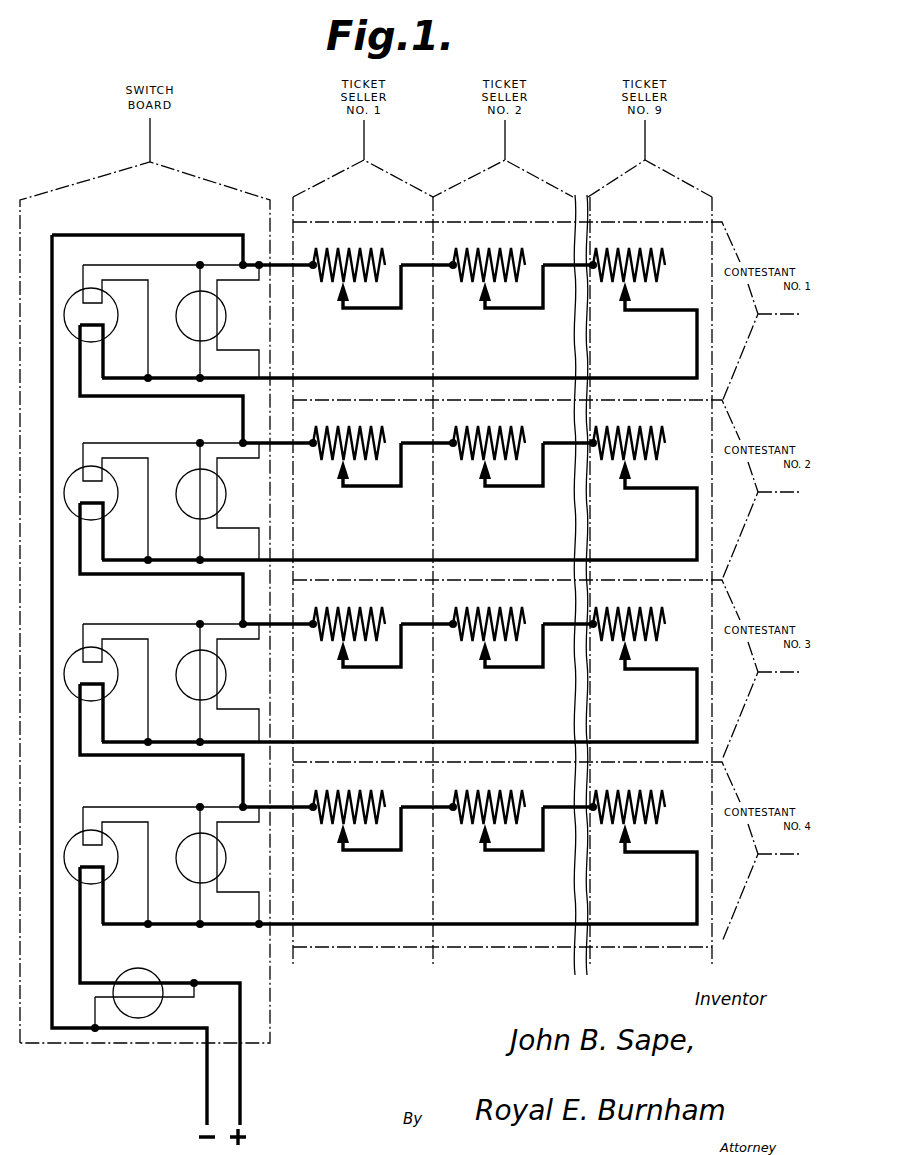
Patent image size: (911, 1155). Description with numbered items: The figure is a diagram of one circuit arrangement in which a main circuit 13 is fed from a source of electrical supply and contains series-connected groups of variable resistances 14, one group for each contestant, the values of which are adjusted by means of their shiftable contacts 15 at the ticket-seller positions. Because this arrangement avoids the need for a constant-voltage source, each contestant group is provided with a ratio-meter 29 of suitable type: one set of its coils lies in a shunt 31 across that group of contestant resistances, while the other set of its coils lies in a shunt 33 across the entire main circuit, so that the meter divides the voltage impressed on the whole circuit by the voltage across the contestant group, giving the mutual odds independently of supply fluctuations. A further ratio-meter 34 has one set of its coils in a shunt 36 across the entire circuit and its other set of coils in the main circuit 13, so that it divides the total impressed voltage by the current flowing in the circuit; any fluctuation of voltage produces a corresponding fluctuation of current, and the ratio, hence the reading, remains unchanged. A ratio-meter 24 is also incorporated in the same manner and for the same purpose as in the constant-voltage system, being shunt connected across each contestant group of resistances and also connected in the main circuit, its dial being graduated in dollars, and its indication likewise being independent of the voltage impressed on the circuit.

The main circuit 13 is at (230, 1077).
The variable resistances 14 is at (457, 252).
The shiftable contacts 15 is at (622, 300).
The ratio-meter 24 is at (104, 317).
The ratio-meter 29 is at (222, 322).
The shunt 31 is at (195, 636).
The shunt 33 is at (238, 896).
The ratio-meter 34 is at (156, 974).
The shunt 36 is at (95, 1018).